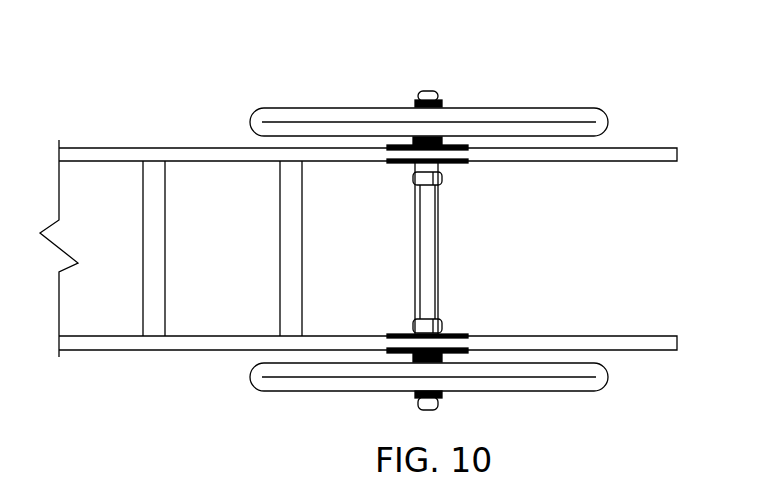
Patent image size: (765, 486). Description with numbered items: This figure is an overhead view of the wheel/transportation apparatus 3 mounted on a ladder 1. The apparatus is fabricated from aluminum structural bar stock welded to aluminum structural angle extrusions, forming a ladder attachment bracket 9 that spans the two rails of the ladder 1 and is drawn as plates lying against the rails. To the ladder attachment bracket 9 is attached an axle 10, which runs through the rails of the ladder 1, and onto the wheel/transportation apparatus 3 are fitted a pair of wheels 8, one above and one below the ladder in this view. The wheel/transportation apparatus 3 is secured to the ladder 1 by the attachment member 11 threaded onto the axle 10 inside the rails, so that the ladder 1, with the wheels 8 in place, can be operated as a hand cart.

The ladder 1 is at (128, 134).
The wheel/transportation apparatus 3 is at (424, 213).
The wheel 8 is at (567, 108).
The ladder attachment bracket 9 is at (455, 336).
The axle 10 is at (425, 92).
The telescoping frame member 11 is at (442, 178).